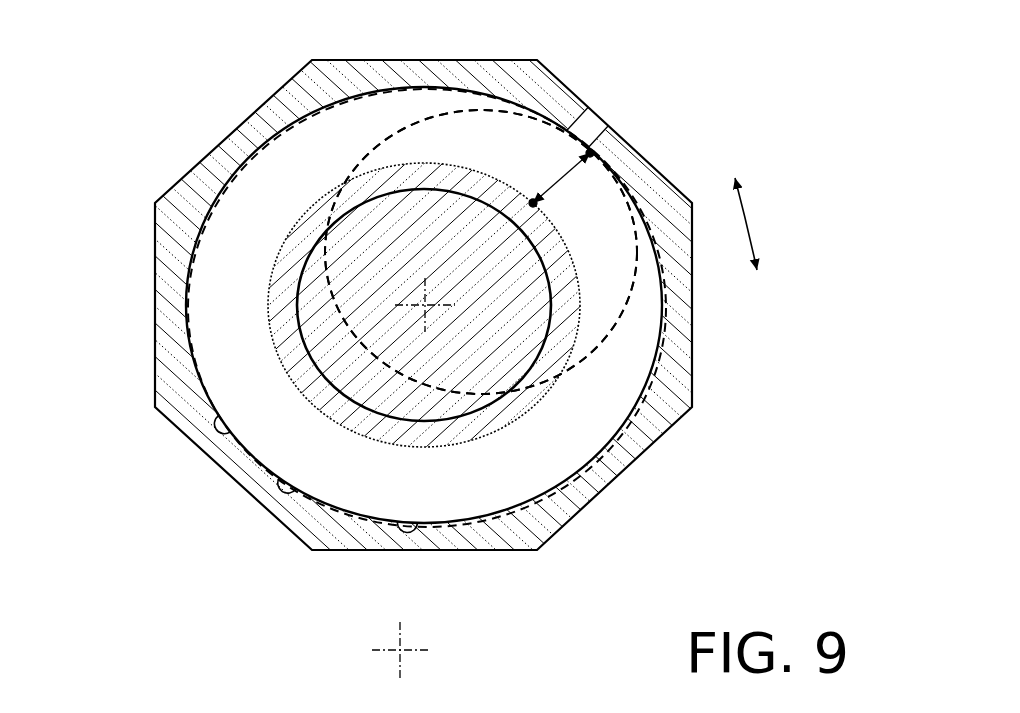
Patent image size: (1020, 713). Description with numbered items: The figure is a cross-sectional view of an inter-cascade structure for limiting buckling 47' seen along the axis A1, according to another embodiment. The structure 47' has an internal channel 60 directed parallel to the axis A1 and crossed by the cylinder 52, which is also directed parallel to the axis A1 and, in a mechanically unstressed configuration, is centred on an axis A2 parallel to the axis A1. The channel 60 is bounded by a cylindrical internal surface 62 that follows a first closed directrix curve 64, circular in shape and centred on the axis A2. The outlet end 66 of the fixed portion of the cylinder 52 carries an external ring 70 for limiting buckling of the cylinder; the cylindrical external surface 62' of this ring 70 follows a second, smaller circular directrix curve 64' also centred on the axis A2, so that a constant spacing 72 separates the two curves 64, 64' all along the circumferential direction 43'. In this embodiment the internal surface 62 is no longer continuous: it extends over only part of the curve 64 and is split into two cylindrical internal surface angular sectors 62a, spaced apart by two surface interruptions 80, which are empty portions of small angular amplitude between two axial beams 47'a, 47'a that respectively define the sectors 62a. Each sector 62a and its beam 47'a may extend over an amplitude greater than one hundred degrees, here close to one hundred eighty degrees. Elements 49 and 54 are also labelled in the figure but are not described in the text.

The circumferential direction 43' is at (788, 224).
The inter-cascade structure for limiting buckling 47' is at (510, 289).
The axial beam 47'a is at (376, 315).
The housing wall 49 is at (434, 58).
The cylinder 52 is at (588, 371).
The rotor inner circle 54 is at (488, 412).
The internal channel 60 is at (442, 368).
The cylindrical internal surface 62 is at (363, 308).
The cylindrical internal surface angular sector 62a is at (266, 469).
The cylindrical external surface 62' is at (398, 204).
The first closed directrix curve 64 is at (368, 305).
The second closed directrix curve 64' is at (424, 227).
The outlet end 66 is at (362, 380).
The external ring 70 is at (324, 221).
The constant spacing 72 is at (564, 182).
The surface interruption 80 is at (612, 134).
The axis A1 is at (410, 647).
The axis A2 is at (432, 303).